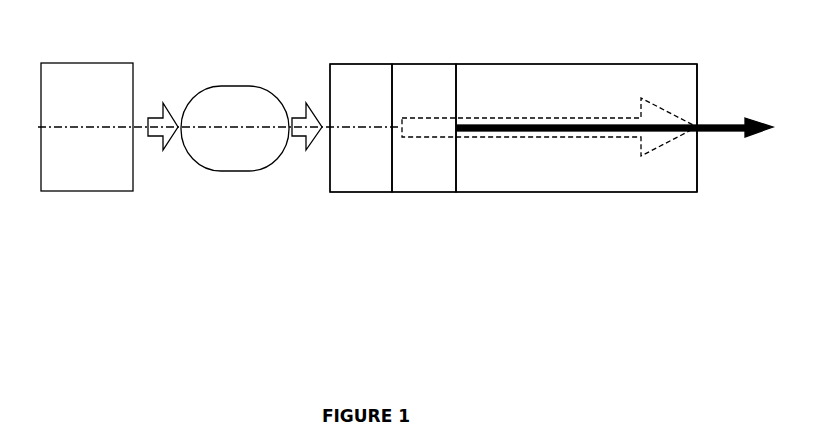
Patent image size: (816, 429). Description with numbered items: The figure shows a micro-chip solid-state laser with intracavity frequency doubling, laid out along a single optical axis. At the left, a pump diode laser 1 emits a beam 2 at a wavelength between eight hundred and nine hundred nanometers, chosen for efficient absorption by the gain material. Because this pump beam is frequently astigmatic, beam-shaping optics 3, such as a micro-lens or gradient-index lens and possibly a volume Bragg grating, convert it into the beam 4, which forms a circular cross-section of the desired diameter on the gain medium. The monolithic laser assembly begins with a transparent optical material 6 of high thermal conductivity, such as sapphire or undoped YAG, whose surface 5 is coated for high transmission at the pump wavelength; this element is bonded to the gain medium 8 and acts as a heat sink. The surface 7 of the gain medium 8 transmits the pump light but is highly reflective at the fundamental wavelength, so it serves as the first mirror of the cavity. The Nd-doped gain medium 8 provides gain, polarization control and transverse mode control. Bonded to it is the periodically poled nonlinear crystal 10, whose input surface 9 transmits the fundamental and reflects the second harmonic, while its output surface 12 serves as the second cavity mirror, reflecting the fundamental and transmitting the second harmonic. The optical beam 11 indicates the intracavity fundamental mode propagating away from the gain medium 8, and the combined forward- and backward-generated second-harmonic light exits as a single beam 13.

The pump diode laser 1 is at (88, 78).
The beam 2 is at (169, 131).
The beam-shaping optics 3 is at (248, 109).
The beam 4 is at (305, 131).
The surface 5 is at (329, 76).
The transparent optical material 6 is at (359, 181).
The surface 7 is at (391, 76).
The gain medium 8 is at (424, 180).
The input surface 9 is at (455, 76).
The nonlinear crystal 10 is at (568, 180).
The optical beam 11 is at (648, 146).
The output surface 12 is at (699, 77).
The beam 13 is at (728, 118).